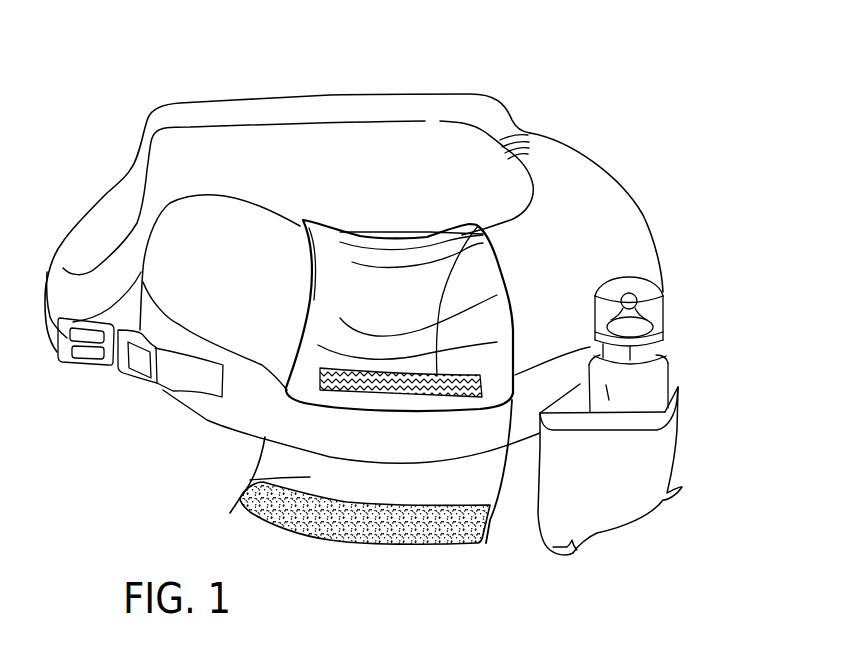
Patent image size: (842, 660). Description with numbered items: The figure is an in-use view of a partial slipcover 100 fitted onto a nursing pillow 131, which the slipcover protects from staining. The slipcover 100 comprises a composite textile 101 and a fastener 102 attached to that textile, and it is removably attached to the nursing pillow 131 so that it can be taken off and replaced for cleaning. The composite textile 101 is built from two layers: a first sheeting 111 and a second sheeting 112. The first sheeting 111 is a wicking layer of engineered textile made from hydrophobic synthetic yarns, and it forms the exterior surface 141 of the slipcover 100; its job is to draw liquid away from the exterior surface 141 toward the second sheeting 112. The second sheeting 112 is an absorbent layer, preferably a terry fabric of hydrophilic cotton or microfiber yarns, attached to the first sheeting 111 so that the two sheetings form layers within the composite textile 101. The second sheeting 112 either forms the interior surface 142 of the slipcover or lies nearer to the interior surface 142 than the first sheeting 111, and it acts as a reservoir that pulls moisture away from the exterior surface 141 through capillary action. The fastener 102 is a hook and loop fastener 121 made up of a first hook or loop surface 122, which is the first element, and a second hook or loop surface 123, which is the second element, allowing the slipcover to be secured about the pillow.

The partial slipcover 100 is at (117, 92).
The composite textile 101 is at (432, 275).
The fastener 102 is at (505, 450).
The first sheeting 111 is at (495, 305).
The second sheeting 112 is at (262, 452).
The hook and loop fastener 121 is at (483, 234).
The first hook or loop surface 122 is at (335, 370).
The second hook or loop surface 123 is at (342, 523).
The nursing pillow 131 is at (622, 260).
The exterior surface 141 is at (350, 278).
The interior surface 142 is at (240, 499).